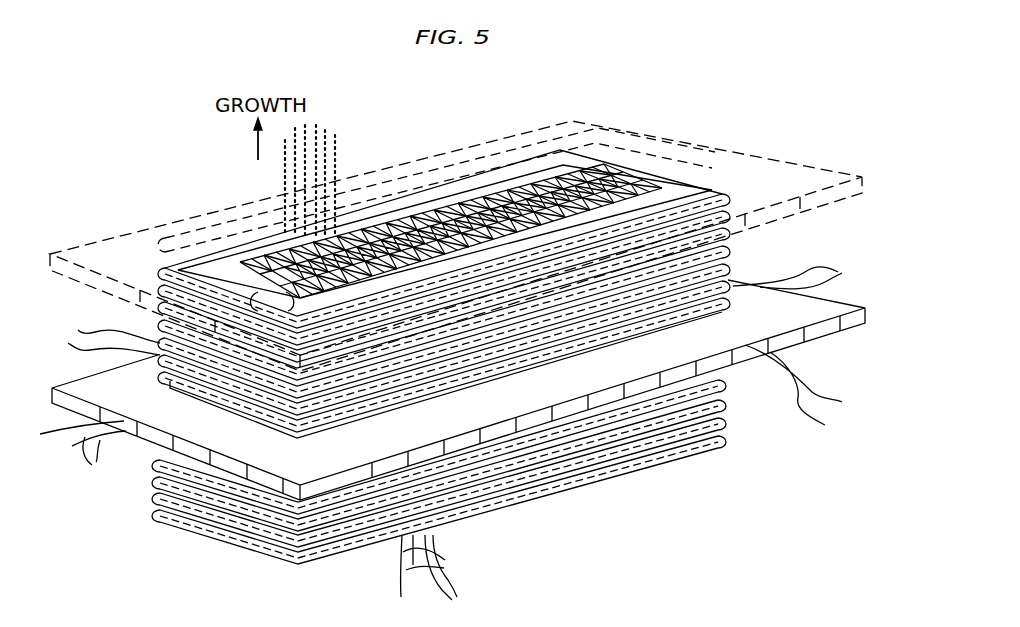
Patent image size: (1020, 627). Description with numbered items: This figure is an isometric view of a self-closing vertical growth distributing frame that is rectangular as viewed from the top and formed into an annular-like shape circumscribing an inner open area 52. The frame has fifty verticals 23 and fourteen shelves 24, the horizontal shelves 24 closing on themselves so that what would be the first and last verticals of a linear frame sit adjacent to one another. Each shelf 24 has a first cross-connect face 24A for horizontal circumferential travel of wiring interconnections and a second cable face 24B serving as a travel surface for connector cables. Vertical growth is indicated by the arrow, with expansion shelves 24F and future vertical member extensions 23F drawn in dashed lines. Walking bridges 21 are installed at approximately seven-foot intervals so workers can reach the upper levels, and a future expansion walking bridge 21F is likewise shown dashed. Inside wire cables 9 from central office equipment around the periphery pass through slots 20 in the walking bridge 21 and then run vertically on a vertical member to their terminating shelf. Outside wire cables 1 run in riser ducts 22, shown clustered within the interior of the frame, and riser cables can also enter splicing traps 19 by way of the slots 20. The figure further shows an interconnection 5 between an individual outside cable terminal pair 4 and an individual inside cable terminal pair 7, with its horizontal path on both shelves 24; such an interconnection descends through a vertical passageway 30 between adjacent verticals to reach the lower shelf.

The outside wire cables 1 is at (458, 560).
The outside cable terminal pair 4 is at (643, 212).
The interconnection 5 is at (644, 212).
The inside cable terminal pair 7 is at (483, 320).
The inside wire cables 9 is at (113, 336).
The splicing traps 19 is at (605, 340).
The slots 20 is at (112, 420).
The walking bridges 21 is at (511, 408).
The future expansion walking bridge 21F is at (110, 257).
The riser ducts 22 is at (281, 262).
The verticals 23 is at (272, 303).
The future vertical member extensions 23F is at (340, 135).
The shelves 24 is at (723, 186).
The first face 24A is at (186, 520).
The second face 24B is at (288, 561).
The expansion shelves 24F is at (723, 142).
The vertical passageway 30 is at (236, 262).
The inner open area 52 is at (468, 203).